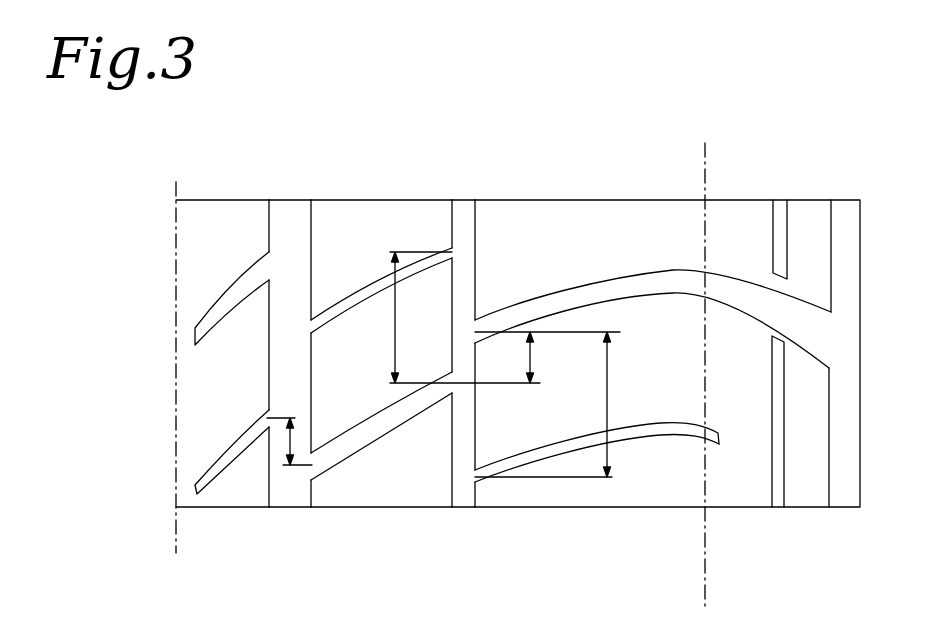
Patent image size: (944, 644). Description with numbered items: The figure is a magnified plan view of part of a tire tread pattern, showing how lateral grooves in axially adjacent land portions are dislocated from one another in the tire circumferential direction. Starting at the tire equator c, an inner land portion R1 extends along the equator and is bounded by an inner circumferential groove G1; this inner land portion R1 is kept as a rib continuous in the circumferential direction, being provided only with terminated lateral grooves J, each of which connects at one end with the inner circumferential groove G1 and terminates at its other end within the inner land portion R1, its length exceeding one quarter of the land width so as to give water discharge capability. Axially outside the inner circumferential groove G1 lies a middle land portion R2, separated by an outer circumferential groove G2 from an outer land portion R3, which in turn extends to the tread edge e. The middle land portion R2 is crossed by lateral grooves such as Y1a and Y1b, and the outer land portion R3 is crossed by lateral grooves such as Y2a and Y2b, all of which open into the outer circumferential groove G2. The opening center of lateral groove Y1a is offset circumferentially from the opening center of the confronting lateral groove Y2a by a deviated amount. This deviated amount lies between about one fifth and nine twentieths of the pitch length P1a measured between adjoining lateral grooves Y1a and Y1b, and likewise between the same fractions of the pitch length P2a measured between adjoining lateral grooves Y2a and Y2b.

The inner land portion R1 is at (225, 187).
The middle land portion R2 is at (405, 181).
The outer land portion R3 is at (565, 164).
The inner circumferential groove G1 is at (293, 208).
The outer circumferential groove G2 is at (465, 205).
The terminated lateral groove J is at (233, 452).
The lateral groove Y1a is at (387, 418).
The lateral groove Y1b is at (352, 295).
The lateral groove Y2a is at (590, 293).
The lateral groove Y2b is at (630, 436).
The pitch length P1a is at (395, 317).
The pitch length P2a is at (608, 384).
The tire equator c is at (175, 189).
The tread edge e is at (706, 155).